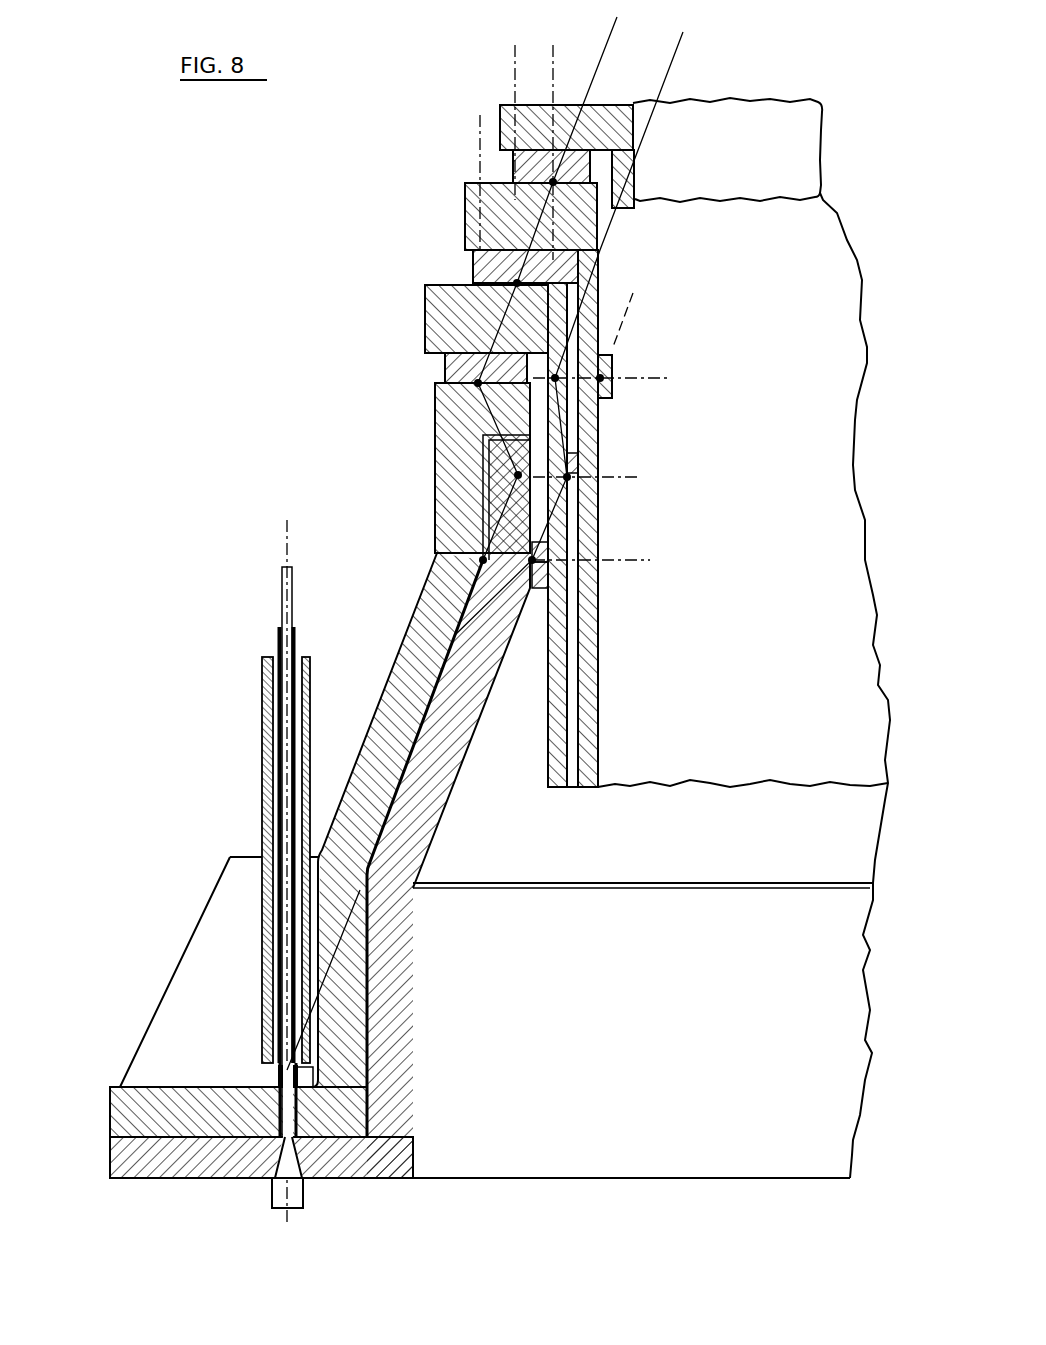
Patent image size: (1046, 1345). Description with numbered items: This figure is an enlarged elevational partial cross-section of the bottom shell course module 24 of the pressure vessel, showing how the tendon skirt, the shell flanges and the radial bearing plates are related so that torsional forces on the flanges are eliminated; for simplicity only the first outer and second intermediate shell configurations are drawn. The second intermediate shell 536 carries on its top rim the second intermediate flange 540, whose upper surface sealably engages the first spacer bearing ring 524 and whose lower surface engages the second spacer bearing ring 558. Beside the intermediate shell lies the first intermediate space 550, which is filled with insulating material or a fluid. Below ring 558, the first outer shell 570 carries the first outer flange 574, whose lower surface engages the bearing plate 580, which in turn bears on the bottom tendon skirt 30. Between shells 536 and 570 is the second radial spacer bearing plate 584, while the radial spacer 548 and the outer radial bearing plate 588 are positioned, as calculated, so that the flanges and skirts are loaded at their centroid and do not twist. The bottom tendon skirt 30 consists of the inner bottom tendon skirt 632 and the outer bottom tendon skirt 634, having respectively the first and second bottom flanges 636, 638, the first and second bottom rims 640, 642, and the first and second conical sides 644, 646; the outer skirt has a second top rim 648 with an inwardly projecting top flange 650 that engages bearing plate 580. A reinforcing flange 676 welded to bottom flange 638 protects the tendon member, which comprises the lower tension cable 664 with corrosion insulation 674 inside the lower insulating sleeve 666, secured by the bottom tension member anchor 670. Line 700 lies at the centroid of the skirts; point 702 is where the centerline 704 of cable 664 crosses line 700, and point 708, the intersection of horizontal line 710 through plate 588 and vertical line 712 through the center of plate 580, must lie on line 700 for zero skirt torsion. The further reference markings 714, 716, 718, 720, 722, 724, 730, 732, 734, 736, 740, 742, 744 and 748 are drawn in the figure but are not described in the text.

The bottom shell course module 24 is at (284, 394).
The bottom tendon skirt 30 is at (542, 1180).
The shell module first spacer bearing ring 524 is at (622, 163).
The second intermediate shell 536 is at (599, 712).
The second intermediate flange 540 is at (468, 214).
The radial spacer 548 is at (610, 357).
The first intermediate space or cavity 550 is at (622, 207).
The shell module second spacer bearing ring 558 is at (478, 257).
The first outer shell 570 is at (551, 784).
The first outer flange 574 is at (427, 316).
The bearing plate 580 is at (447, 365).
The second radial spacer bearing plate 584 is at (574, 455).
The outer radial bearing plate 588 is at (548, 548).
The inner bottom tendon skirt 632 is at (434, 835).
The outer bottom tendon skirt 634 is at (405, 634).
The first bottom flange 636 is at (111, 1158).
The second bottom flange 638 is at (111, 1104).
The first bottom rim 640 is at (400, 1018).
The second bottom rim 642 is at (360, 953).
The first conical side 644 is at (465, 735).
The second conical side 646 is at (382, 718).
The second top rim 648 is at (478, 410).
The top flange 650 is at (486, 455).
The lower tension cable 664 is at (294, 604).
The lower insulating sleeve 666 is at (263, 705).
The bottom tension member anchor 670 is at (304, 1194).
The corrosion insulation 674 is at (278, 638).
The reinforcing flange 676 is at (170, 997).
The line through the middle surface or centroid of the tendon skirts 700 is at (683, 40).
The intersection point of cable centerline and centroid line 702 is at (279, 1073).
The centerline of tension cable 704 is at (289, 546).
The intersection point of horizontal line 710 and vertical line 712 708 is at (479, 560).
The horizontal line through outer radial bearing plate 710 is at (648, 560).
The vertical line through center of vertical spacer bearing plate 712 is at (480, 124).
The thread eyelet 714 is at (514, 477).
The eyelet axis 716 is at (640, 477).
The axis 718 is at (513, 48).
The thread eyelet 720 is at (572, 400).
The axis 722 is at (558, 40).
The eyelet axis 724 is at (668, 378).
The thread eyelet 730 is at (475, 384).
The thread eyelet 732 is at (513, 283).
The thread guide block 734 is at (530, 156).
The second thread 736 is at (618, 24).
The guide insert 740 is at (548, 575).
The thread eyelet 742 is at (572, 480).
The thread eyelet 744 is at (604, 382).
The guide path 748 is at (635, 296).